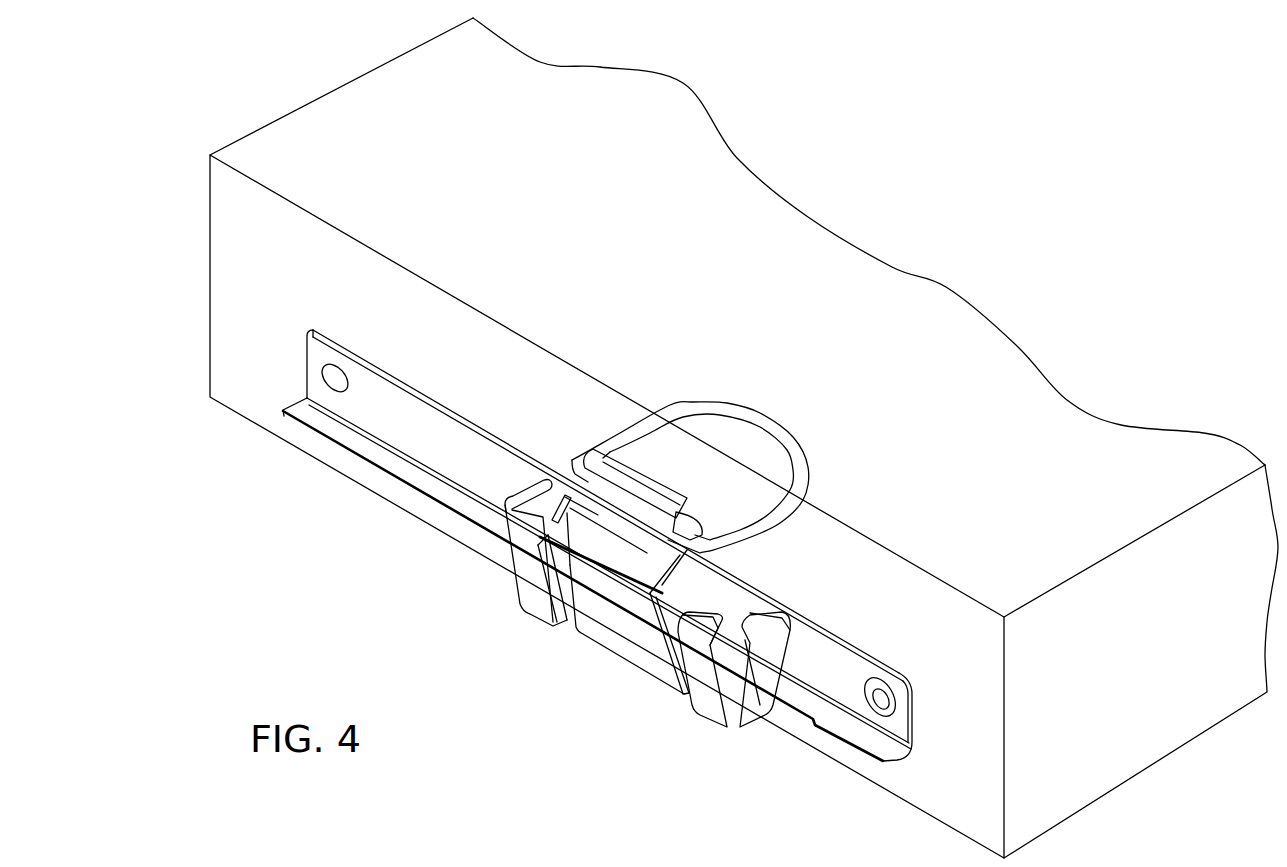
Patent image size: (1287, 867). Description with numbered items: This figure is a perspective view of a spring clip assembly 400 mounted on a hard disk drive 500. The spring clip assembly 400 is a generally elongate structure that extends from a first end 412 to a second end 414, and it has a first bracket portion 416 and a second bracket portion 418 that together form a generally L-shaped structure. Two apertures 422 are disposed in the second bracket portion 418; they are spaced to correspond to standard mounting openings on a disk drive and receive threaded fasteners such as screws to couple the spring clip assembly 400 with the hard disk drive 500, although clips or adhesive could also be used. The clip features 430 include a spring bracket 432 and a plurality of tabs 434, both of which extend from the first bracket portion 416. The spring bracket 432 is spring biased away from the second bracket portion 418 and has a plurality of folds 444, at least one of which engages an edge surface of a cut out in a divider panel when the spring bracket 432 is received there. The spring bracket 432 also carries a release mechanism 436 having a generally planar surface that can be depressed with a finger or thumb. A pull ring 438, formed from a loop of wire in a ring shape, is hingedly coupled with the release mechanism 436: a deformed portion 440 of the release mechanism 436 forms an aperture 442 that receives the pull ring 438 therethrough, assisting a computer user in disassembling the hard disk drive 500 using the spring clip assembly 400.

The spring clip assembly 400 is at (617, 573).
The first end 412 is at (912, 717).
The second end 414 is at (607, 565).
The first bracket portion 416 is at (888, 750).
The second bracket portion 418 is at (853, 663).
The apertures 422 is at (329, 382).
The clip features 430 is at (516, 601).
The spring bracket 432 is at (643, 655).
The tabs 434 is at (748, 713).
The release mechanism 436 is at (681, 489).
The pull ring 438 is at (757, 412).
The deformed portion 440 is at (632, 508).
The aperture 442 is at (680, 533).
The folds 444 is at (565, 522).
The hard disk drive 500 is at (302, 143).